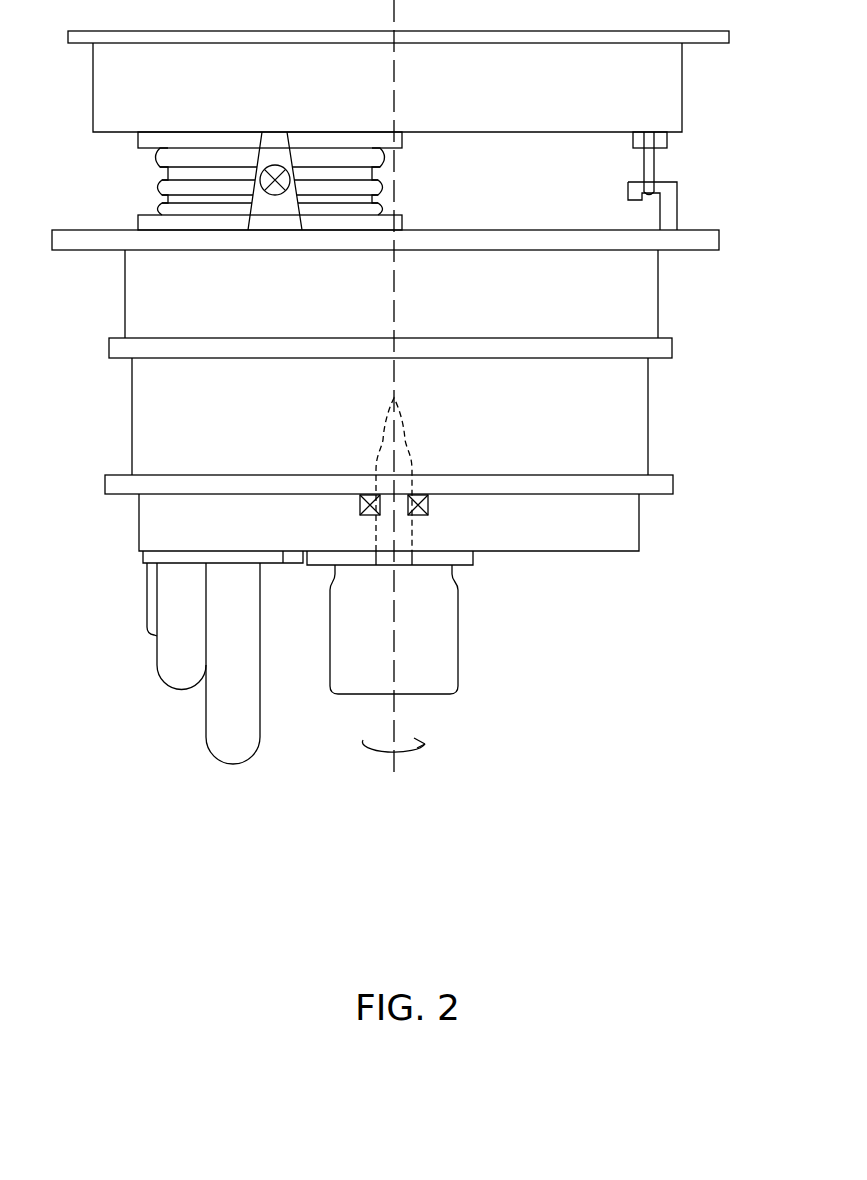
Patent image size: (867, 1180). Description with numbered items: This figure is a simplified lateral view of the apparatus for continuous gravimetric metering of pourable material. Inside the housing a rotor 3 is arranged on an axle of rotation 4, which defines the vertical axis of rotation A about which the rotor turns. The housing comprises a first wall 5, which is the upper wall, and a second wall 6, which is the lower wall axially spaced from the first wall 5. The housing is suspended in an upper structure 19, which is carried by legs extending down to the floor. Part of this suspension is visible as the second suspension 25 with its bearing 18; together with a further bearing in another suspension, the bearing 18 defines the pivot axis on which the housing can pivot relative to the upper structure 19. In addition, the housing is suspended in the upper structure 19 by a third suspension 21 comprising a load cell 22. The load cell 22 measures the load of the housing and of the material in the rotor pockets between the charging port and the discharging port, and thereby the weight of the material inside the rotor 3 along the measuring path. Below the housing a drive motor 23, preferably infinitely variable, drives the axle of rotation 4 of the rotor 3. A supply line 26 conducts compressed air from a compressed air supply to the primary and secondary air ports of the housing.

The rotor 3 is at (408, 426).
The axle of rotation 4 is at (447, 516).
The first wall 5 is at (414, 304).
The second wall 6 is at (421, 540).
The bearing 18 is at (187, 227).
The upper structure 19 is at (413, 86).
The third suspension 21 is at (405, 216).
The load cell 22 is at (687, 163).
The drive motor 23 is at (426, 636).
The second suspension 25 is at (221, 158).
The supply line 26 is at (178, 663).
The axis of rotation A is at (426, 388).